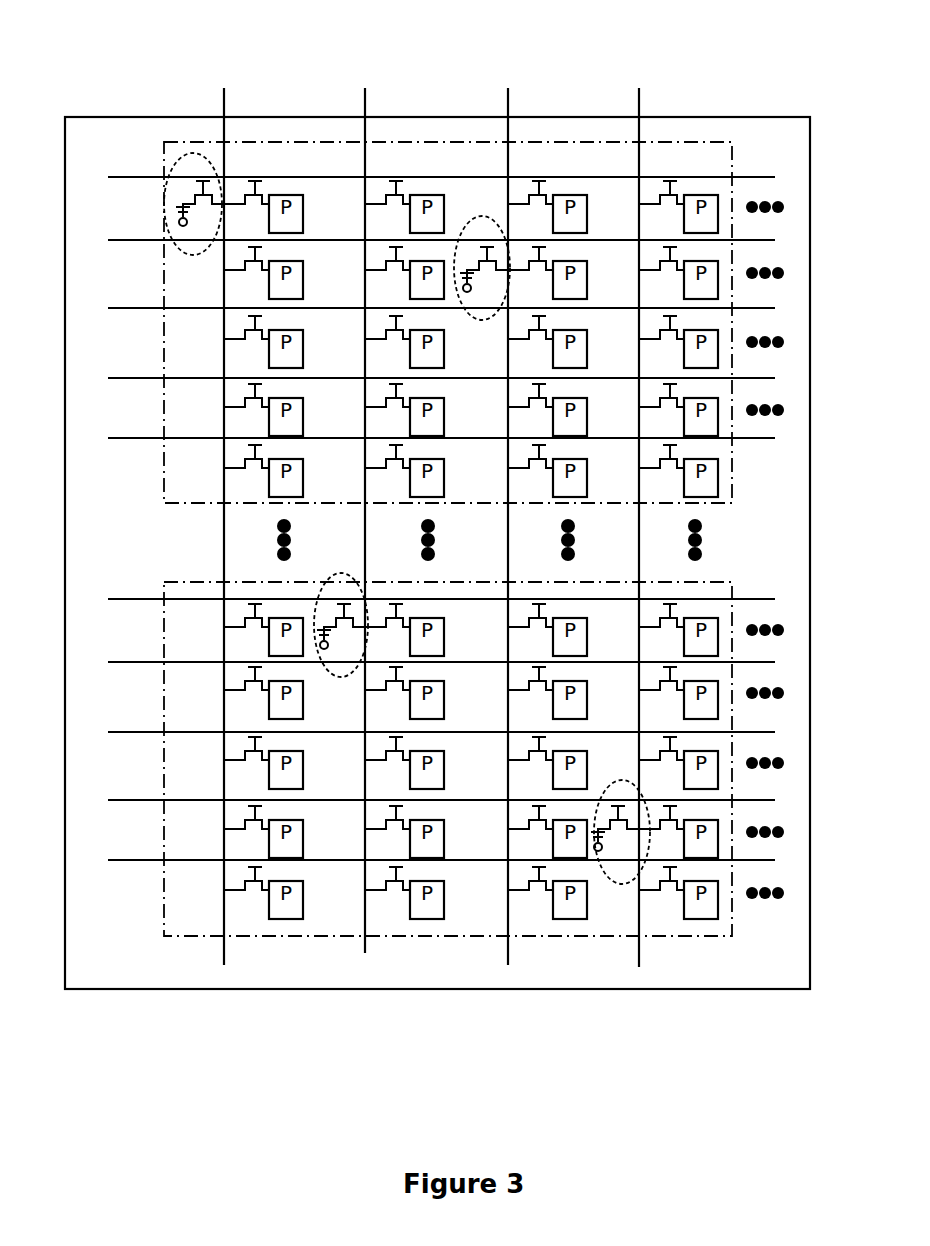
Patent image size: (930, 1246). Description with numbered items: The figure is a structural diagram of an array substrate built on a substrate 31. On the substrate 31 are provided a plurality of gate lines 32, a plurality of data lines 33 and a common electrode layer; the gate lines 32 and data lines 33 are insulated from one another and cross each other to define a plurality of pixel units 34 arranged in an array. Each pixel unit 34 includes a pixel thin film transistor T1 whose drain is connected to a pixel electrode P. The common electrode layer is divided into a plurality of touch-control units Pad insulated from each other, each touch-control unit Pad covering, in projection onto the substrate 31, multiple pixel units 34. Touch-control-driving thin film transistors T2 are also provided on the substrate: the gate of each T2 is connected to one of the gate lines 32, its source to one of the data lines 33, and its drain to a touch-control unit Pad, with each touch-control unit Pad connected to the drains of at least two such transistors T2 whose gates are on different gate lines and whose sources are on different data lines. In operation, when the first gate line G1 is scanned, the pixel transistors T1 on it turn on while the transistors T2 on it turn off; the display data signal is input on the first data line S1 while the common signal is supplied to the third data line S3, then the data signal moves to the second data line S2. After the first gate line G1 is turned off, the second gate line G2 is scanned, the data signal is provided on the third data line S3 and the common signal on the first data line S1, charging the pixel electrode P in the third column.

The substrate 31 is at (591, 1006).
The gate lines 32 is at (187, 888).
The data lines 33 is at (653, 960).
The pixel units 34 is at (479, 918).
The pixel thin film transistor T1 is at (252, 917).
The touch-control-driving thin film transistor T2 is at (163, 133).
The touch-control unit Pad is at (746, 955).
The first data line S1 is at (219, 510).
The second data line S2 is at (363, 504).
The third data line S3 is at (506, 510).
The first gate line G1 is at (426, 168).
The second gate line G2 is at (426, 233).